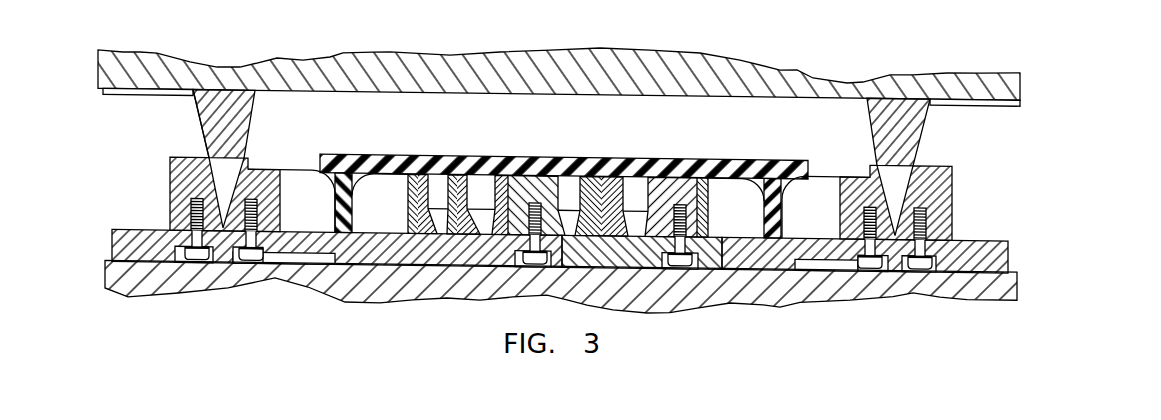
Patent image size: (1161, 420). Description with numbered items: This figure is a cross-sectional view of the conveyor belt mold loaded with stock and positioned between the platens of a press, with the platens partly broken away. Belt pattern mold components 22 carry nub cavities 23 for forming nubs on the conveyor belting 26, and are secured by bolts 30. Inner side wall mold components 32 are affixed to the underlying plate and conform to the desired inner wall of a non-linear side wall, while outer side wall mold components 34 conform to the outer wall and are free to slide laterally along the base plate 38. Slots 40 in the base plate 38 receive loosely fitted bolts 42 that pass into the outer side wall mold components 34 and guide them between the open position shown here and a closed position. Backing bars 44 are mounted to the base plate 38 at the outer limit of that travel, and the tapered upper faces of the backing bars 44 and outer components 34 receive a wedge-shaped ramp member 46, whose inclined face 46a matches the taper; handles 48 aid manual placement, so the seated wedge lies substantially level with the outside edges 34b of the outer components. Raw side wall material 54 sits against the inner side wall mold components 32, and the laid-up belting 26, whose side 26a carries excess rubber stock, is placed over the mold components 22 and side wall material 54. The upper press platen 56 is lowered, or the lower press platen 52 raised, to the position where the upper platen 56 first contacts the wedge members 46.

The belt pattern mold component 22 is at (533, 183).
The nub cavity 23 is at (437, 184).
The conveyor belting 26 is at (586, 178).
The side of belting material 26a is at (475, 184).
The bolt 30 is at (535, 250).
The inner side wall mold component 32 is at (392, 204).
The outer side wall mold component 34 is at (260, 170).
The outside edge of outer side wall mold component 34b is at (245, 154).
The base plate 38 is at (153, 240).
The slot 40 is at (315, 253).
The loosely fitted bolt 42 is at (245, 255).
The backing bar 44 is at (180, 188).
The wedge member 46 is at (235, 115).
The wedge inclined face 46a is at (195, 124).
The handle 48 is at (145, 93).
The lower press platen 52 is at (717, 281).
The raw side wall material 54 is at (803, 200).
The upper press platen 56 is at (552, 78).